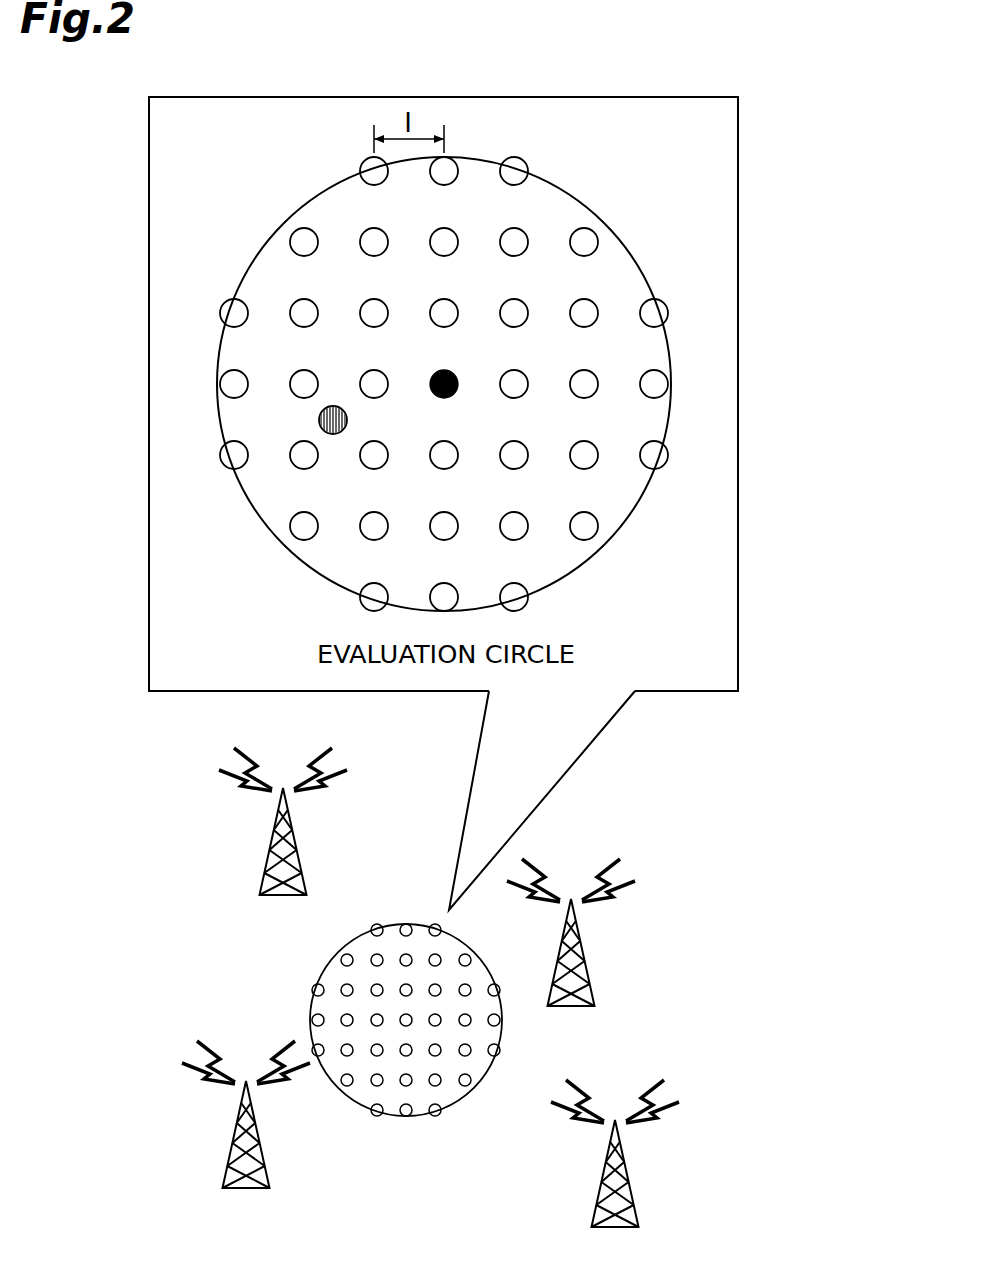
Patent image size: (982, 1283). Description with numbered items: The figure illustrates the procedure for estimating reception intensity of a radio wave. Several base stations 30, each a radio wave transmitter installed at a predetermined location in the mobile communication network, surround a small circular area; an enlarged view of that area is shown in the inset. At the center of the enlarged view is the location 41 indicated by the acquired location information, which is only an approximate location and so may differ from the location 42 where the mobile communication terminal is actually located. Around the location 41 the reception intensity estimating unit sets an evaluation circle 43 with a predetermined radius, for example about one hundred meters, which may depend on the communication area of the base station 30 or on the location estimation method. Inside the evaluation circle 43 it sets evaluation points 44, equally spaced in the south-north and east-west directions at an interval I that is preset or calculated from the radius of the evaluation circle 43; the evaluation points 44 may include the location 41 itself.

The base station 30 is at (262, 878).
The location indicated by the location information 41 is at (446, 370).
The location where the mobile communication terminal is actually located 42 is at (318, 420).
The evaluation circle 43 is at (642, 503).
The evaluation points 44 is at (516, 298).